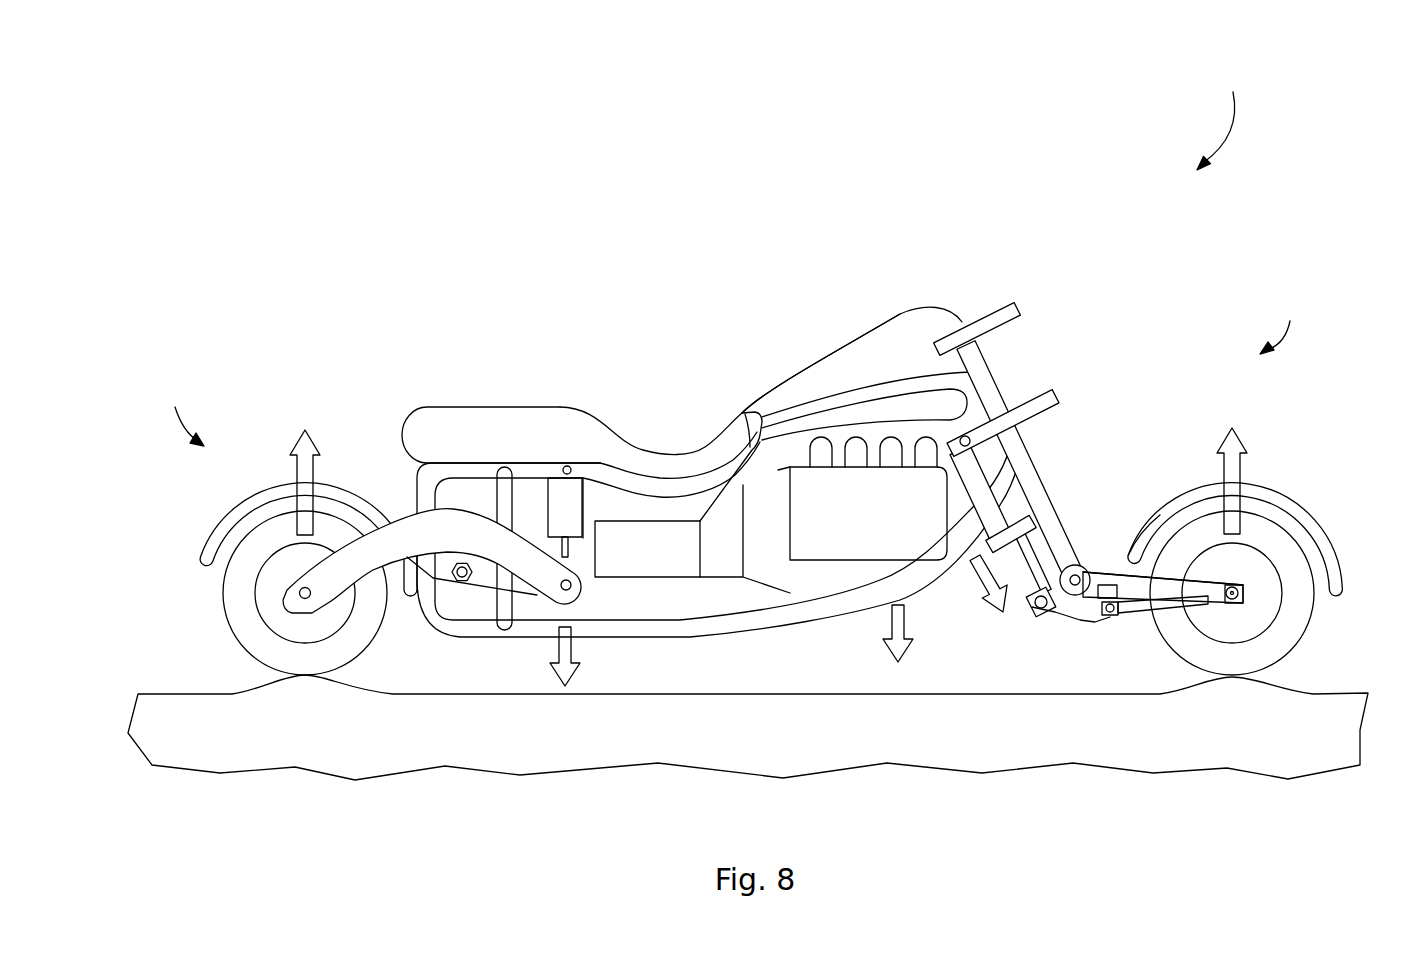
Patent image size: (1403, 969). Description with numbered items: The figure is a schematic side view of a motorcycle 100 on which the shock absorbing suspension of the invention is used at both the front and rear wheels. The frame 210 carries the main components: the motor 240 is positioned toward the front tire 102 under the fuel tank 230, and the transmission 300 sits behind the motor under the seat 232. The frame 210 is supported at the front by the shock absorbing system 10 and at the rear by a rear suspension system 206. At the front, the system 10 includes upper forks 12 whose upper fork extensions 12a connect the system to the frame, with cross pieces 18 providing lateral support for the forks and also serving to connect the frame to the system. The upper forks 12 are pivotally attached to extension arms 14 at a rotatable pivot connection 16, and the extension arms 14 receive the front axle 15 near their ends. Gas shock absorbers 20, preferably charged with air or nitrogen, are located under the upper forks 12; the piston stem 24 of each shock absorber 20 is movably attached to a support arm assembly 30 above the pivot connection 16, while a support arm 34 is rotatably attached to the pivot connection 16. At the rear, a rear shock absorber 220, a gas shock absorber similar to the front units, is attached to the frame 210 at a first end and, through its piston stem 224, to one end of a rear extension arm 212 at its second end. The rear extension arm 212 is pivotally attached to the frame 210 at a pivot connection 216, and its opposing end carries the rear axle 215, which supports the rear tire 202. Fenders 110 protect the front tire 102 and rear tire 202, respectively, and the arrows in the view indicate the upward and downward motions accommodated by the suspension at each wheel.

The shock absorbing system 10 is at (1287, 324).
The upper forks 12 is at (1045, 514).
The upper fork extensions 12a is at (978, 383).
The extension arms 14 is at (1128, 530).
The axle 15 is at (1229, 604).
The pivot connection 16 is at (1082, 565).
The cross pieces 18 is at (1062, 396).
The shock absorbers 20 is at (1010, 524).
The piston stem 24 is at (1033, 613).
The support arm assembly 30 is at (1076, 614).
The support arm 34 is at (1138, 604).
The motorcycle 100 is at (1222, 116).
The front tire 102 is at (1308, 618).
The fenders 110 is at (252, 492).
The rear tire 202 is at (225, 623).
The rear suspension assembly 206 is at (172, 413).
The frame 210 is at (542, 468).
The rear extension arm 212 is at (348, 548).
The rear axle 215 is at (283, 594).
The pivot connection 216 is at (470, 583).
The rear shock absorber 220 is at (572, 497).
The piston stem 224 is at (567, 553).
The fuel tank 230 is at (892, 337).
The seat 232 is at (475, 420).
The motor 240 is at (905, 530).
The transmission 300 is at (668, 558).